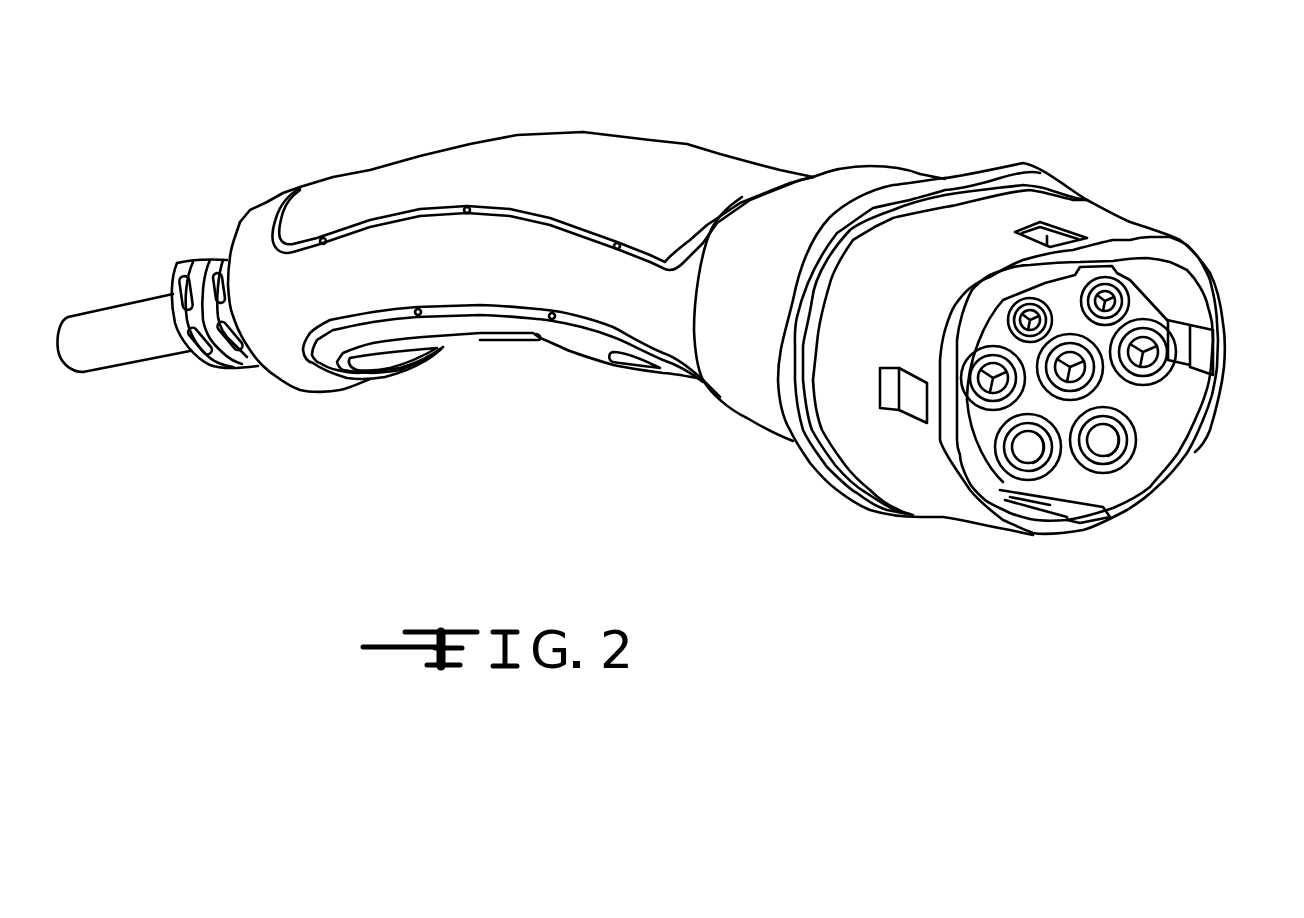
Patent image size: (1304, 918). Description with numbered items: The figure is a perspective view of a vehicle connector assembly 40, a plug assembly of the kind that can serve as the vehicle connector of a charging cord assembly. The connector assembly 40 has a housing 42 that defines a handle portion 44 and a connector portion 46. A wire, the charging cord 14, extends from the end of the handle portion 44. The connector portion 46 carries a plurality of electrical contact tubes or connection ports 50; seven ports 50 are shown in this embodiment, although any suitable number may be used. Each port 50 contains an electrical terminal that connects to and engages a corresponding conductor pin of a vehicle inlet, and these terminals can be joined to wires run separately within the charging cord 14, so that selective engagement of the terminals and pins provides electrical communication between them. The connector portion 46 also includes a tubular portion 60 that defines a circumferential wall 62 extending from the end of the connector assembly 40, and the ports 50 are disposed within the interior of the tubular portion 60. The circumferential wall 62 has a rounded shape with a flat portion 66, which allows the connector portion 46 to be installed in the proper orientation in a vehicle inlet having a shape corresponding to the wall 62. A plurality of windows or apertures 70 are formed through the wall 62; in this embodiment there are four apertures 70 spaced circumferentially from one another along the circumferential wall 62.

The charging cord 14 is at (131, 298).
The vehicle connector assembly 40 is at (1000, 97).
The housing 42 is at (863, 177).
The handle portion 44 is at (502, 163).
The connector portion 46 is at (1178, 236).
The connection ports 50 is at (1037, 437).
The tubular portion 60 is at (930, 497).
The circumferential wall 62 is at (1140, 510).
The flat portion 66 is at (1141, 253).
The apertures 70 is at (1060, 226).